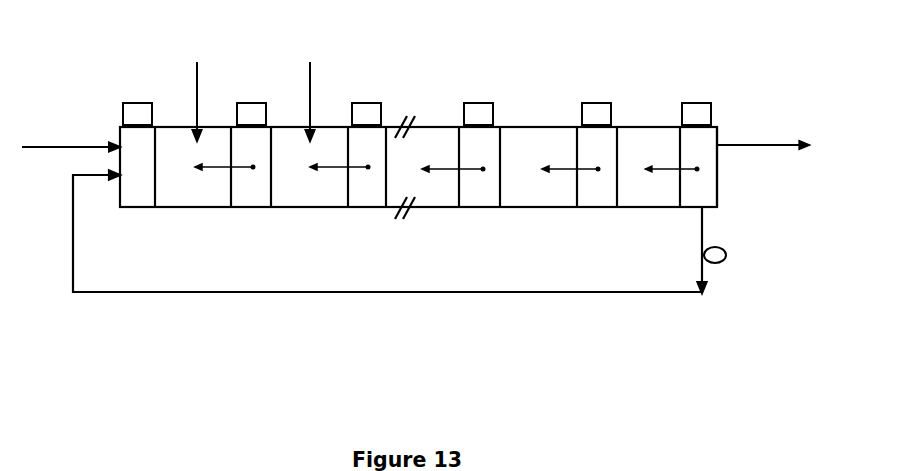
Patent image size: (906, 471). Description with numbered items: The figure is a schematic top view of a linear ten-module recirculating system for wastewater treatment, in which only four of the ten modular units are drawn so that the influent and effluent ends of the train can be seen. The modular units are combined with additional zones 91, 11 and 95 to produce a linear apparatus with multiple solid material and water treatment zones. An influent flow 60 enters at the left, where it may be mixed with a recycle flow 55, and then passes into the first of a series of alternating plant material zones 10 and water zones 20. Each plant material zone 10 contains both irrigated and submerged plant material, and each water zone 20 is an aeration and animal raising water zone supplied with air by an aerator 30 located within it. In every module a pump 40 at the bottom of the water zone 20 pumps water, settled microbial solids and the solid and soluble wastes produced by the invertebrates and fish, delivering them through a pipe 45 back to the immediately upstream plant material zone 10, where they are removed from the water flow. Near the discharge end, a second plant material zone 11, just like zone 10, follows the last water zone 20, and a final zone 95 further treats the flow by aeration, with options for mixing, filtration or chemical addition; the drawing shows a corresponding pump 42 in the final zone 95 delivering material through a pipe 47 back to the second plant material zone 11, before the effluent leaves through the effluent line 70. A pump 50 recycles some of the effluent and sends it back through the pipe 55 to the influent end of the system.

The plant material zone 10 is at (373, 167).
The second plant material zone 11 is at (657, 167).
The water zone 20 is at (428, 167).
The aerator 30 is at (417, 114).
The pump 40 is at (424, 179).
The outlet of final separation unit 42 is at (697, 180).
The pipe 45 is at (396, 178).
The final recycle stream 47 is at (671, 179).
The pump 50 is at (729, 255).
The pipe 55 is at (390, 245).
The influent stream 60 is at (172, 107).
The effluent line 70 is at (763, 156).
The additional zone 91 is at (140, 167).
The final zone 95 is at (701, 167).